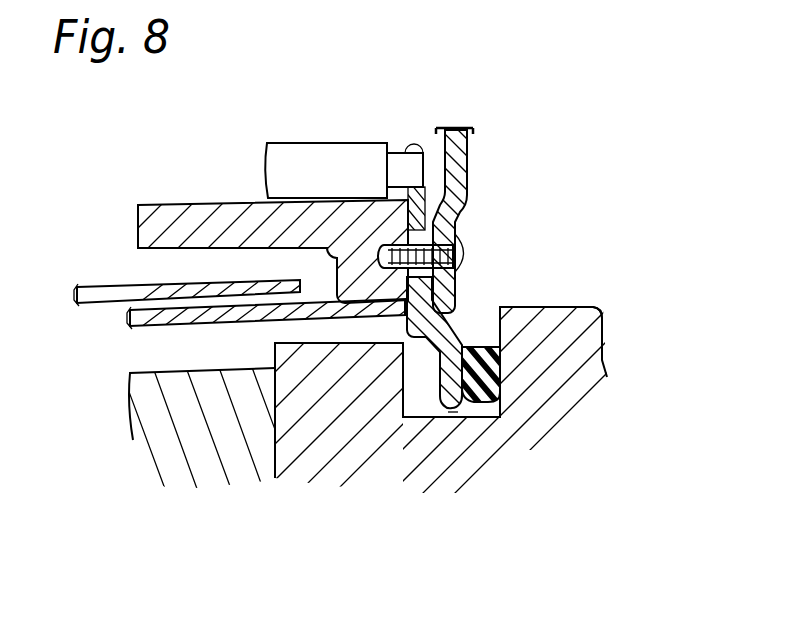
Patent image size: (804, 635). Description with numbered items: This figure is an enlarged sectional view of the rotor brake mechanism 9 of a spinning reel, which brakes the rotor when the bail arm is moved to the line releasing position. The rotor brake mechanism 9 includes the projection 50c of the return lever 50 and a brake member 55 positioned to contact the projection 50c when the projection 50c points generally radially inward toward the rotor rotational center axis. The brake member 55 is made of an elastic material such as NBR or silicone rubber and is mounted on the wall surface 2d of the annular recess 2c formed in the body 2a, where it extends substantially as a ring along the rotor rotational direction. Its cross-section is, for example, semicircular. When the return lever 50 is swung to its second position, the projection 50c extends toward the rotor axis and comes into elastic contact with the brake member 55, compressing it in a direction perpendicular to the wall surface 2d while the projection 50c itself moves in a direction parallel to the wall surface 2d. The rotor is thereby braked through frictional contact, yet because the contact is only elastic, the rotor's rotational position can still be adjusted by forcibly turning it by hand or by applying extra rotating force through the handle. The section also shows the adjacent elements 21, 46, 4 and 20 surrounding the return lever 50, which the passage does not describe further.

The holder block 21 is at (197, 203).
The clamp member 46 is at (317, 170).
The cutting blade 4 is at (95, 287).
The blade support plate 20 is at (150, 323).
The body 2a is at (602, 360).
The annular recess 2c is at (597, 306).
The wall surface 2d is at (483, 420).
The return lever 50 is at (461, 315).
The projection 50c is at (445, 356).
The brake member 55 is at (477, 347).
The rotor brake mechanism 9 is at (453, 408).